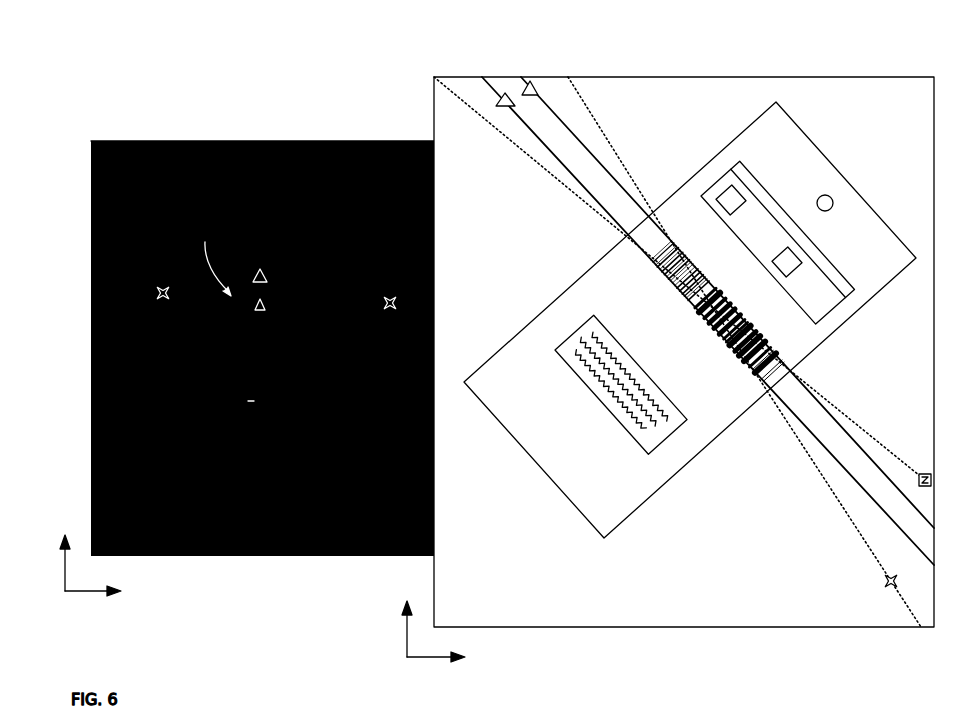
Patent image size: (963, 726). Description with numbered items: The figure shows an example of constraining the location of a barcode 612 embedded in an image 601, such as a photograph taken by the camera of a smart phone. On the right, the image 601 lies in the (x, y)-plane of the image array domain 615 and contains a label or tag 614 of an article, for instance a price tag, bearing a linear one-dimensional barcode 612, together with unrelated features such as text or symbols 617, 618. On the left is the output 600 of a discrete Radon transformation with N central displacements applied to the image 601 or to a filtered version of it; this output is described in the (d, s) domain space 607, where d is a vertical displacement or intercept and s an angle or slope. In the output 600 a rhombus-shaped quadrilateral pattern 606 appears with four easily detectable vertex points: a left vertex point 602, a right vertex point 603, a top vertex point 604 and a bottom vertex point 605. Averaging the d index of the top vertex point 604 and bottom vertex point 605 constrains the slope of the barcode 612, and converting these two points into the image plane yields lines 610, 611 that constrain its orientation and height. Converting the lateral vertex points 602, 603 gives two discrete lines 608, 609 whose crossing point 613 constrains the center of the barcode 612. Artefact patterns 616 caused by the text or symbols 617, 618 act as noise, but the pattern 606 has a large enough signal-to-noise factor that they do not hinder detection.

The output of discrete Radon transformation 600 is at (232, 128).
The image 601 is at (835, 68).
The left vertex point 602 is at (155, 277).
The right vertex point 603 is at (382, 288).
The top vertex point 604 is at (252, 260).
The bottom vertex point 605 is at (252, 303).
The quadrilateral shaped pattern 606 is at (220, 311).
The domain space 607 is at (57, 584).
The discrete line 608 is at (876, 574).
The discrete line 609 is at (914, 464).
The line 610 is at (523, 73).
The line 611 is at (497, 84).
The barcode 612 is at (698, 313).
The crossing point 613 is at (707, 282).
The label or tag 614 is at (865, 205).
The image array domain 615 is at (399, 650).
The artefact patterns 616 is at (295, 132).
The text or symbols 617 is at (658, 388).
The text or symbols 618 is at (760, 205).